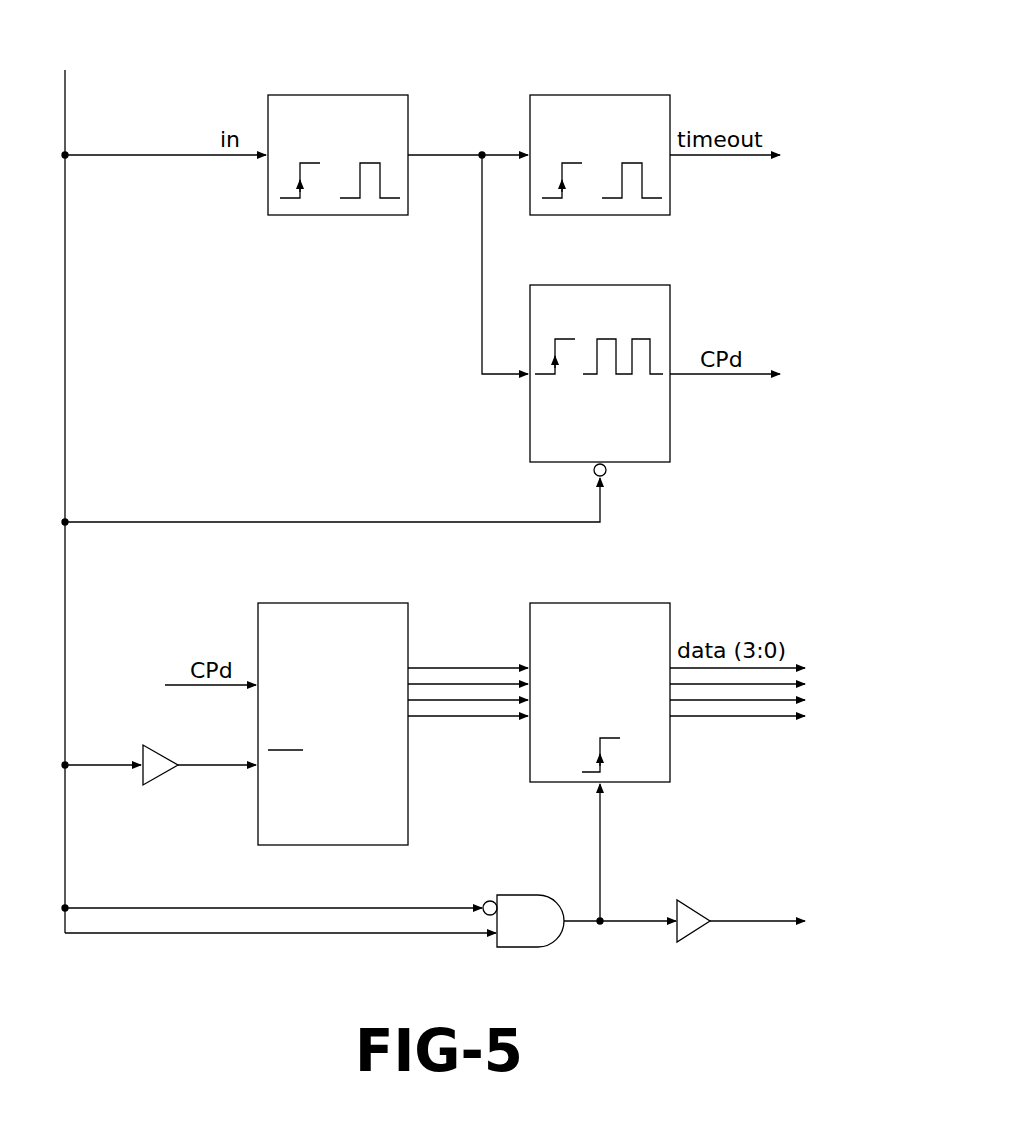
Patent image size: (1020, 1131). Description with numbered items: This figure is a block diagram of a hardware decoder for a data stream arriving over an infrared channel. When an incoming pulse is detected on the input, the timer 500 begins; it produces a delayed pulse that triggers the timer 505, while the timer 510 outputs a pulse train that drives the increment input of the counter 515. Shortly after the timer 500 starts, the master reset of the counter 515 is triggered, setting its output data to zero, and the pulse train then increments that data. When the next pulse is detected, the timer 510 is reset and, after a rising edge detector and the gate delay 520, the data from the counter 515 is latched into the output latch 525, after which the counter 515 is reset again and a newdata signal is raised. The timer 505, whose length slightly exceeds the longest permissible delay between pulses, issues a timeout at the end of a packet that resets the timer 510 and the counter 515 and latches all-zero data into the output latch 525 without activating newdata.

The timer 500 is at (338, 95).
The timer 505 is at (600, 95).
The timer 510 is at (670, 313).
The counter 515 is at (338, 603).
The gate delay 520 is at (512, 895).
The output latch 525 is at (600, 603).